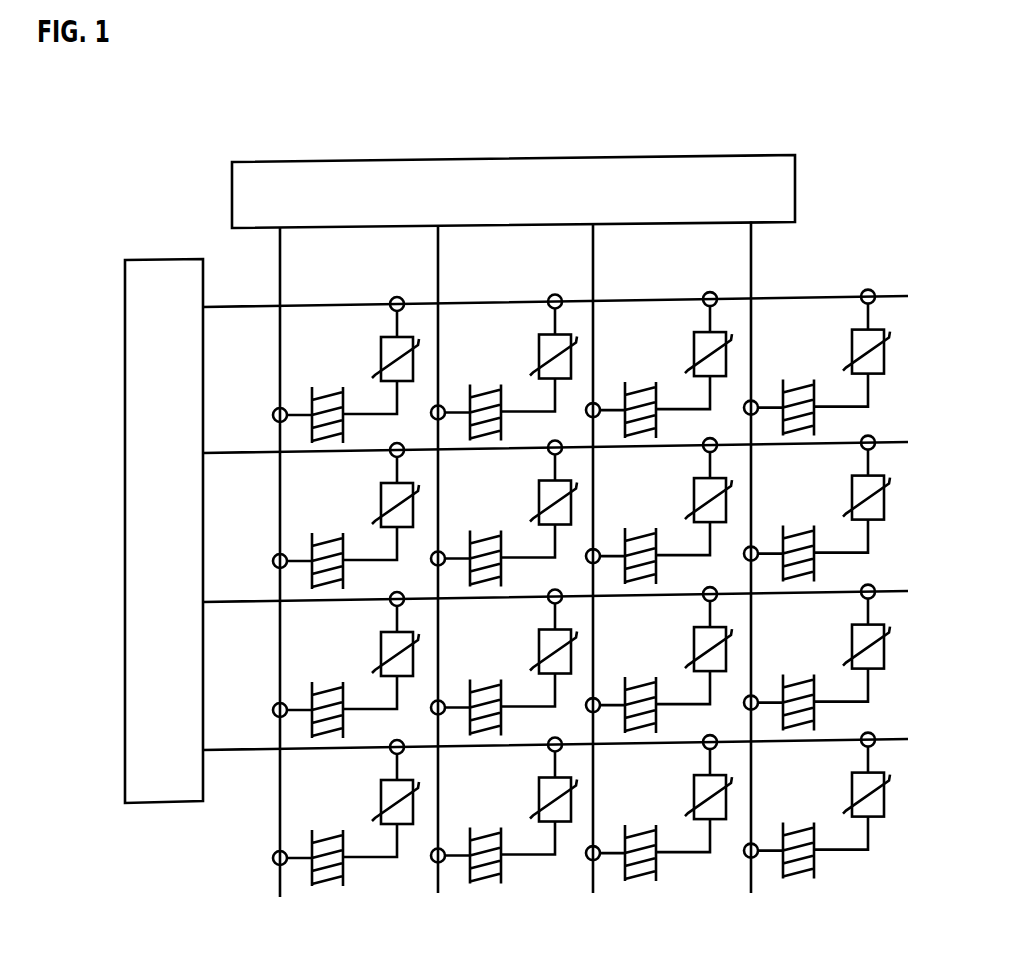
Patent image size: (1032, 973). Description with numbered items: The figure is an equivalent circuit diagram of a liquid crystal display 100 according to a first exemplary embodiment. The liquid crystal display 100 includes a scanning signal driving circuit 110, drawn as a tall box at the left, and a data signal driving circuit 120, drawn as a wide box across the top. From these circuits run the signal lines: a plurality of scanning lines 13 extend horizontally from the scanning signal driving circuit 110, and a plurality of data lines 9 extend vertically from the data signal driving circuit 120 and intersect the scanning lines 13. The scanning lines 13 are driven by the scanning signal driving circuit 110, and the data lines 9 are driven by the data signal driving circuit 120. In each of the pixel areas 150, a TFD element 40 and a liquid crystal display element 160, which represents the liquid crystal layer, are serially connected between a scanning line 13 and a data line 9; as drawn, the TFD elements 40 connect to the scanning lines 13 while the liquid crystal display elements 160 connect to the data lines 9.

The liquid crystal display 100 is at (854, 252).
The scanning signal driving circuit 110 is at (172, 259).
The data signal driving circuit 120 is at (507, 158).
The data line 9 is at (279, 284).
The scanning line 13 is at (237, 752).
The pixel area 150 is at (751, 893).
The liquid crystal display element 160 is at (327, 890).
The TFD element 40 is at (410, 825).